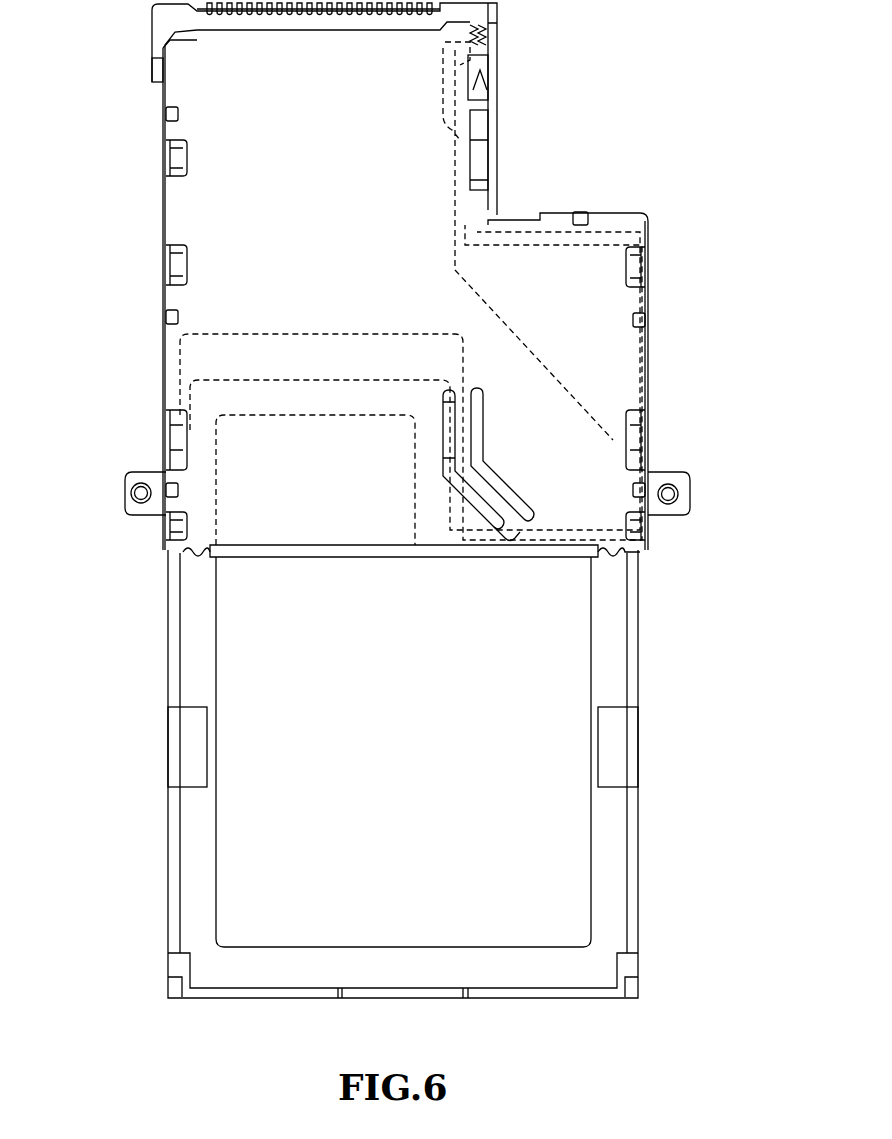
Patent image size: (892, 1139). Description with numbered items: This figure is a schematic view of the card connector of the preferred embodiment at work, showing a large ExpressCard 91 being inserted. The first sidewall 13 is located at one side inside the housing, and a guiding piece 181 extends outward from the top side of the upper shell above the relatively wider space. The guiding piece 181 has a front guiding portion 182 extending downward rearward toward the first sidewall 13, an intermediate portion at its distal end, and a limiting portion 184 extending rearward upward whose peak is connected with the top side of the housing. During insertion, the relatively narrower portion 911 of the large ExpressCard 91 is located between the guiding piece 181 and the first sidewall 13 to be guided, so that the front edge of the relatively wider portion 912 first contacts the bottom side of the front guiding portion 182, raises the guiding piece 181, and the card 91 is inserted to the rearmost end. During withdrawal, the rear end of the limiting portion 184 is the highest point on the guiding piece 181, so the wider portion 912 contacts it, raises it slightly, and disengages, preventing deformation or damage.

The first sidewall 13 is at (163, 337).
The large ExpressCard 91 is at (160, 903).
The relatively narrower portion 911 is at (262, 480).
The relatively wider portion 912 is at (270, 778).
The guiding piece 181 is at (487, 473).
The front guiding portion 182 is at (505, 500).
The limiting portion 184 is at (470, 428).